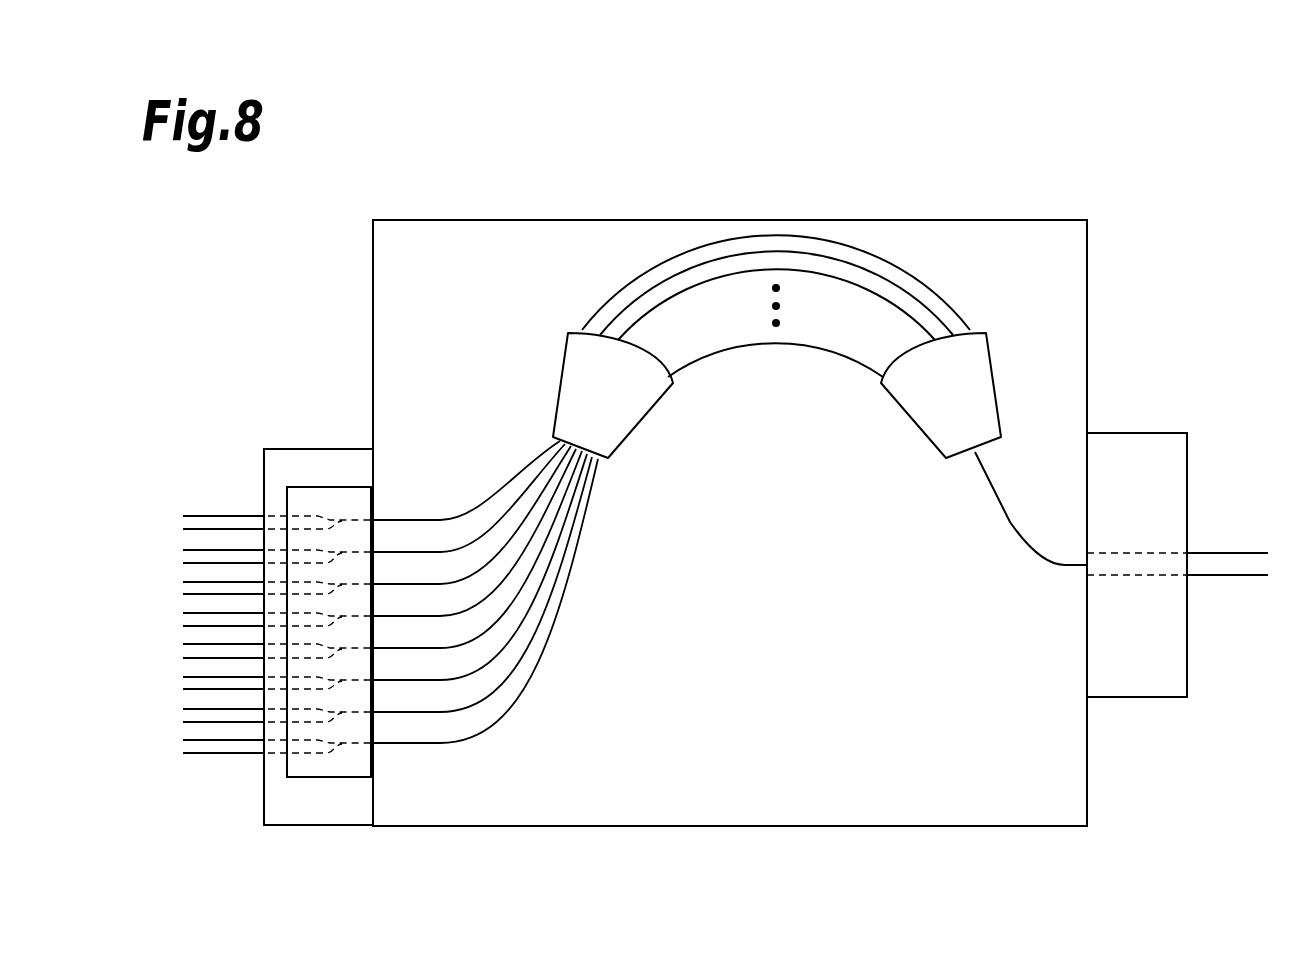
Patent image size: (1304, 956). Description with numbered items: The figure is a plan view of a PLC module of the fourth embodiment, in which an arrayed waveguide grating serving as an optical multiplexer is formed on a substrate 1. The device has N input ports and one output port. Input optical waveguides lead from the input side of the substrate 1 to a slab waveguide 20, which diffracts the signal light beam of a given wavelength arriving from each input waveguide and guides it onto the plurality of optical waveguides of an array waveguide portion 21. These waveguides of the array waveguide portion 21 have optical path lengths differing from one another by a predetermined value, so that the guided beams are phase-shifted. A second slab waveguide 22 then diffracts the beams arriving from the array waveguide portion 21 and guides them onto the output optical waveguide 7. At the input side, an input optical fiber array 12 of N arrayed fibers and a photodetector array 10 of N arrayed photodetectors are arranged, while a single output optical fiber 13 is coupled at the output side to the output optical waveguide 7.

The substrate 1 is at (483, 220).
The output optical waveguide 7 is at (1012, 530).
The photodetector array 10 is at (338, 487).
The input optical fiber array 12 is at (294, 449).
The slab waveguide 20 is at (639, 430).
The array waveguide portion 21 is at (778, 344).
The slab waveguide 22 is at (929, 445).
The output optical fiber 13 is at (1253, 553).